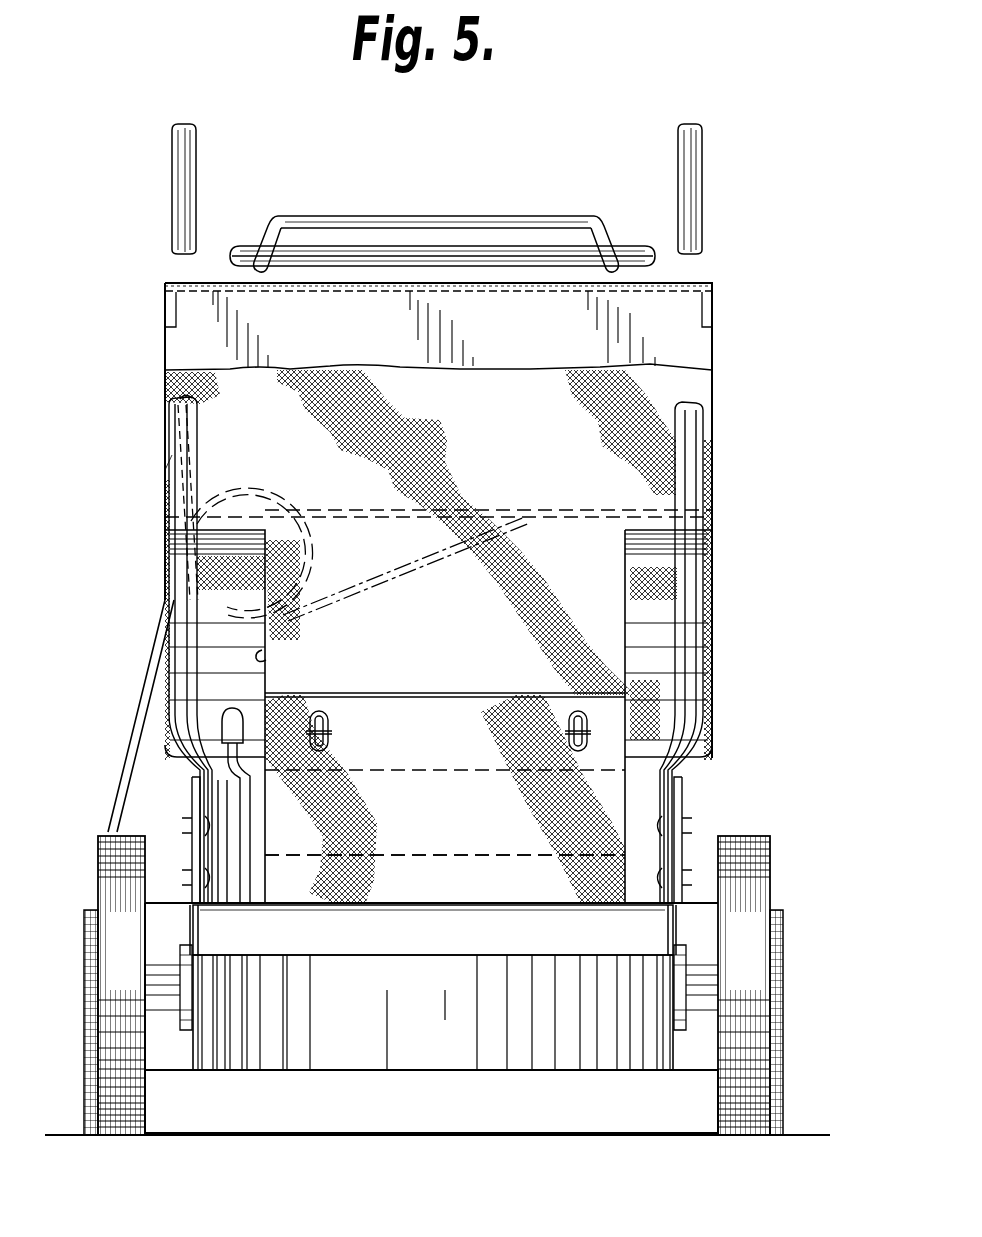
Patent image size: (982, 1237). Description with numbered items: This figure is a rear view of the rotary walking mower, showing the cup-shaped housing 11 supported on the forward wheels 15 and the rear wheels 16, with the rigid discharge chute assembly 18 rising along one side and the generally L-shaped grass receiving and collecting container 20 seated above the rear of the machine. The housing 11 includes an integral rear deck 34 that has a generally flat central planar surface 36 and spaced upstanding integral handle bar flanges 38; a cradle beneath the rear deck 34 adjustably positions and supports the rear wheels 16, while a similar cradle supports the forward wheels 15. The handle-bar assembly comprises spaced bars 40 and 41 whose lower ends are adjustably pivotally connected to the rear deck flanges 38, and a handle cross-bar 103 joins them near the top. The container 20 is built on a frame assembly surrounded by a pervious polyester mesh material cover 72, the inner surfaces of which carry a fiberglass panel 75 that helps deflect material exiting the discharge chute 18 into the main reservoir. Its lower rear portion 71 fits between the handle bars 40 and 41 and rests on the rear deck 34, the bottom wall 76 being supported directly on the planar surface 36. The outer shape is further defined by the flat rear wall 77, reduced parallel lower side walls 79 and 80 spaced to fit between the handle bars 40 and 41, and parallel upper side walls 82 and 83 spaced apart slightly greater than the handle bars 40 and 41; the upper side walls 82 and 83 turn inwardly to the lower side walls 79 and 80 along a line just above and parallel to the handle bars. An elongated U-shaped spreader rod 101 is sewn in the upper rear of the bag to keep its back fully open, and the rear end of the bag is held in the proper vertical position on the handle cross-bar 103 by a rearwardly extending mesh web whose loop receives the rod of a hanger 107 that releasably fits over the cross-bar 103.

The housing 11 is at (278, 1052).
The forward wheels 15 is at (86, 978).
The rear wheels 16 is at (102, 858).
The discharge chute assembly 18 is at (142, 706).
The grass receiving and collecting container 20 is at (150, 390).
The rear deck 34 is at (426, 893).
The central planar surface 36 is at (497, 903).
The handle bar flanges 38 is at (190, 795).
The handle bar 40 is at (689, 446).
The handle bar 41 is at (180, 468).
The lower rear portion 71 is at (381, 884).
The mesh material cover 72 is at (452, 462).
The fiberglass panel 75 is at (668, 350).
The bottom wall 76 is at (312, 905).
The rear wall 77 is at (598, 562).
The lower side wall 79 is at (268, 658).
The lower side wall 80 is at (632, 650).
The upper side wall 82 is at (163, 433).
The upper side wall 83 is at (712, 497).
The spreader rod 101 is at (346, 285).
The handle cross-bar 103 is at (512, 262).
The hanger 107 is at (488, 218).